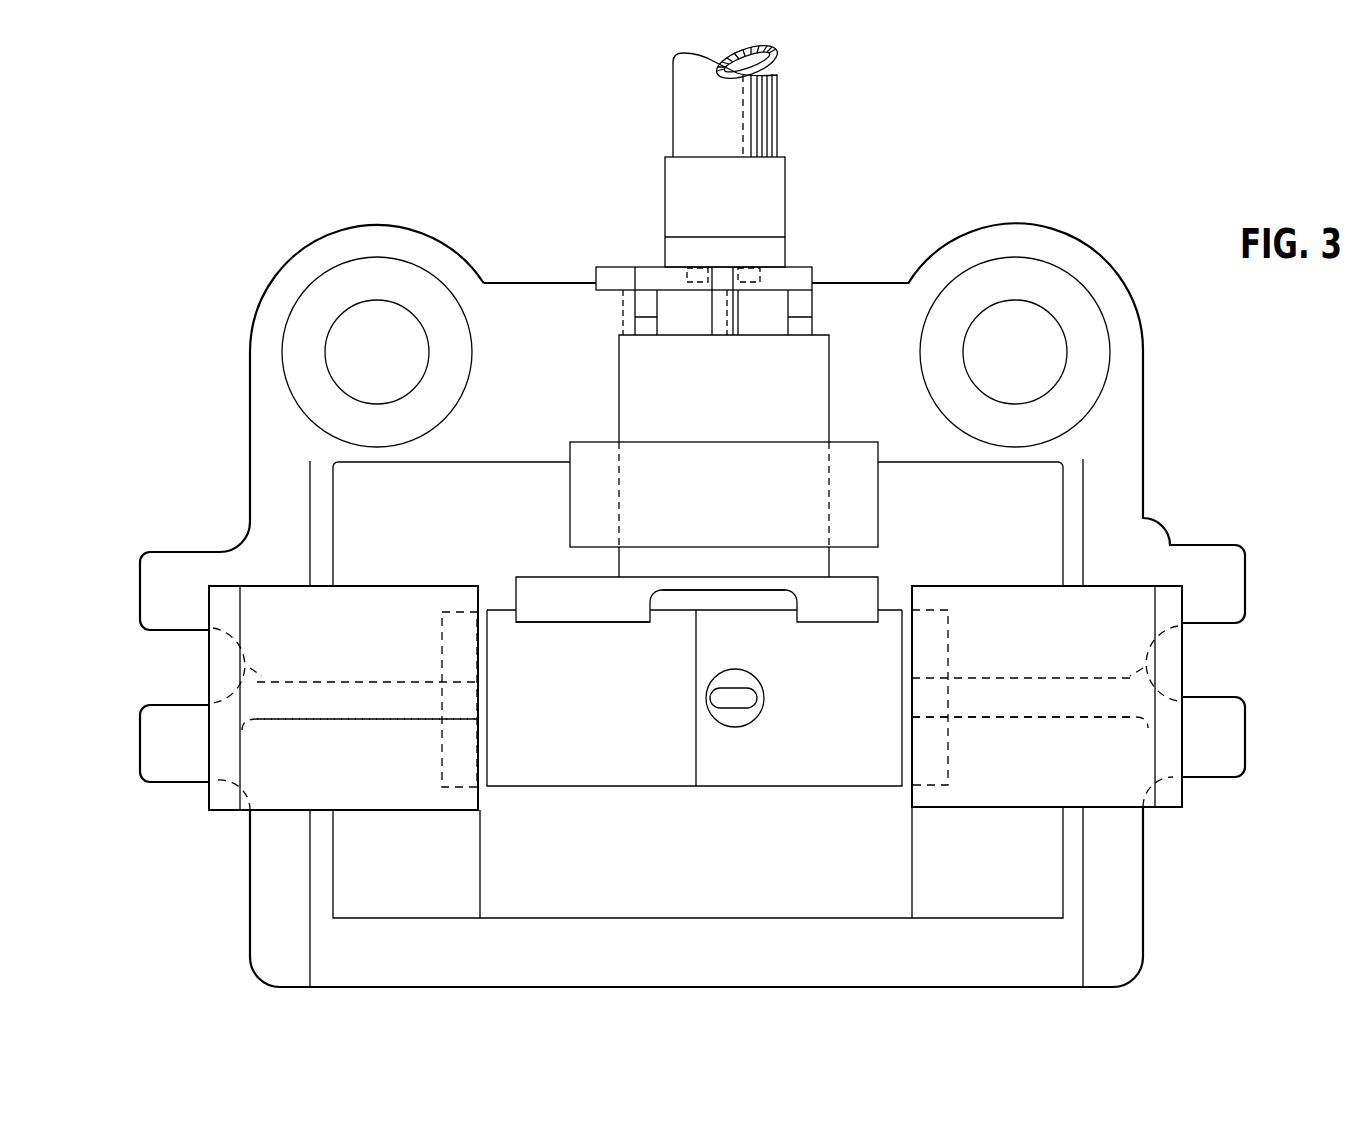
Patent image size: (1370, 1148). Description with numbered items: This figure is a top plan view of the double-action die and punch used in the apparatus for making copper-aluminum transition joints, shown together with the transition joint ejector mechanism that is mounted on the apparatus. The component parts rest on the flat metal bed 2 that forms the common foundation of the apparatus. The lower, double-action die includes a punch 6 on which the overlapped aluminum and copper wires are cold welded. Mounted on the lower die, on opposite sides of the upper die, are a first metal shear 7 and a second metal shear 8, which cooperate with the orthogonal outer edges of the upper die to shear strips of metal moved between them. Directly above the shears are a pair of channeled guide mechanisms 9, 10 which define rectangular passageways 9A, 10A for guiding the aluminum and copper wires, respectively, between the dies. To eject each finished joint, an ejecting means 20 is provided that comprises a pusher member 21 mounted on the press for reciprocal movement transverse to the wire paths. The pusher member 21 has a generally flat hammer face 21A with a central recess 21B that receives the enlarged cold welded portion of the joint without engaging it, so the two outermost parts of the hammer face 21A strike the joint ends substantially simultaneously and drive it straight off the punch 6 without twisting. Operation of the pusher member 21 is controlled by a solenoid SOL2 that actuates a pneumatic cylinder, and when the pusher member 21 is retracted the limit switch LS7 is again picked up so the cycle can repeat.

The ejecting means 20 is at (855, 242).
The pusher member 21 is at (540, 578).
The hammer face 21A is at (592, 626).
The recess 21B is at (745, 590).
The first metal shear 7 is at (489, 750).
The second metal shear 8 is at (901, 748).
The punch 6 is at (748, 709).
The channeled guide mechanism 9 is at (348, 664).
The rectangular passageway 9A is at (368, 712).
The channeled guide mechanism 10 is at (1052, 641).
The rectangular passageway 10A is at (1076, 713).
The limit switch LS7 is at (606, 268).
The solenoid SOL2 is at (678, 197).
The bed 2 is at (694, 153).